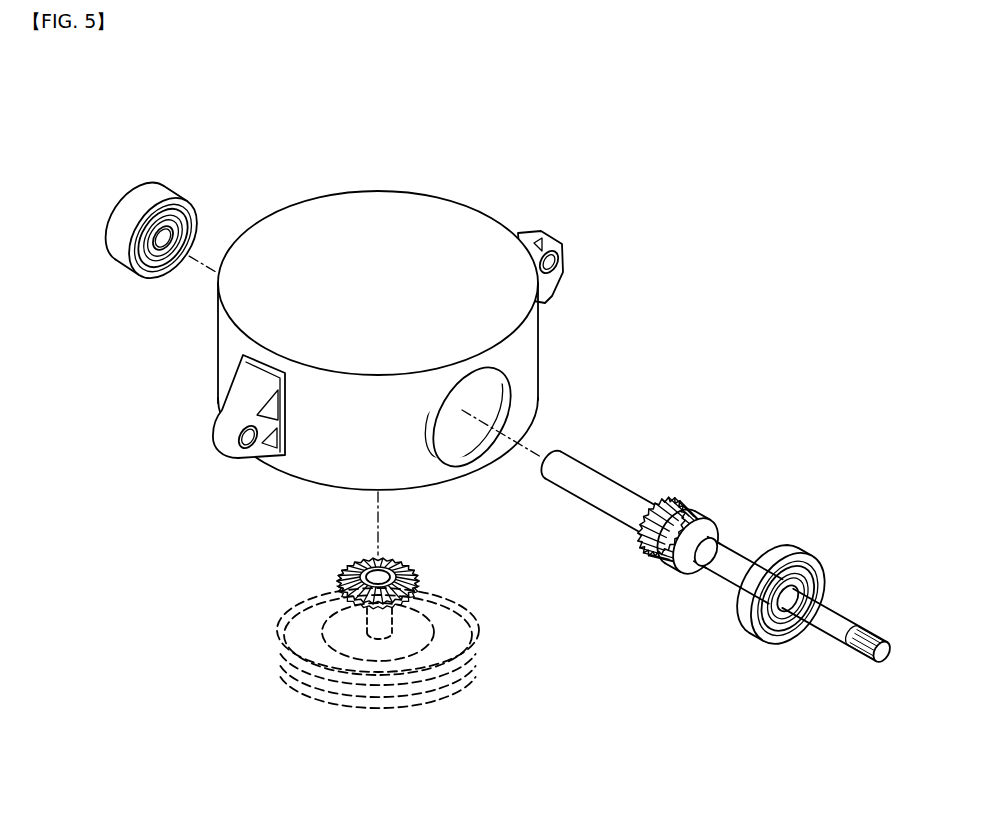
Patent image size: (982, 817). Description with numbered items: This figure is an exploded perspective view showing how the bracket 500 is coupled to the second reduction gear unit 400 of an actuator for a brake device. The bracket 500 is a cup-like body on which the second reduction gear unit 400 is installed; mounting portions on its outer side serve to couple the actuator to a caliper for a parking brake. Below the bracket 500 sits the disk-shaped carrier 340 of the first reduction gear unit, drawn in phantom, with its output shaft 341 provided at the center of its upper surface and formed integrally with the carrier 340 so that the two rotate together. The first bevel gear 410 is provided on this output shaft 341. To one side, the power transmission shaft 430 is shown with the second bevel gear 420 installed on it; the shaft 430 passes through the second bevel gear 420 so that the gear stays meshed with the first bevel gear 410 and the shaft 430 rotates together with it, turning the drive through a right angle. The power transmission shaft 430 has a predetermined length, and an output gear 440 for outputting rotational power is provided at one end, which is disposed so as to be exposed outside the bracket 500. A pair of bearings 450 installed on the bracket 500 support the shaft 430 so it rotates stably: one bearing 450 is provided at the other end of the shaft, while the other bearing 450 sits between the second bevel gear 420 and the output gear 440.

The bracket 500 is at (354, 333).
The bearing 450 is at (157, 187).
The second reduction gear unit 400 is at (681, 636).
The power transmission shaft 430 is at (613, 485).
The second bevel gear 420 is at (690, 500).
The output gear 440 is at (876, 631).
The first bevel gear 410 is at (340, 577).
The carrier 340 is at (423, 700).
The output shaft 341 is at (387, 623).